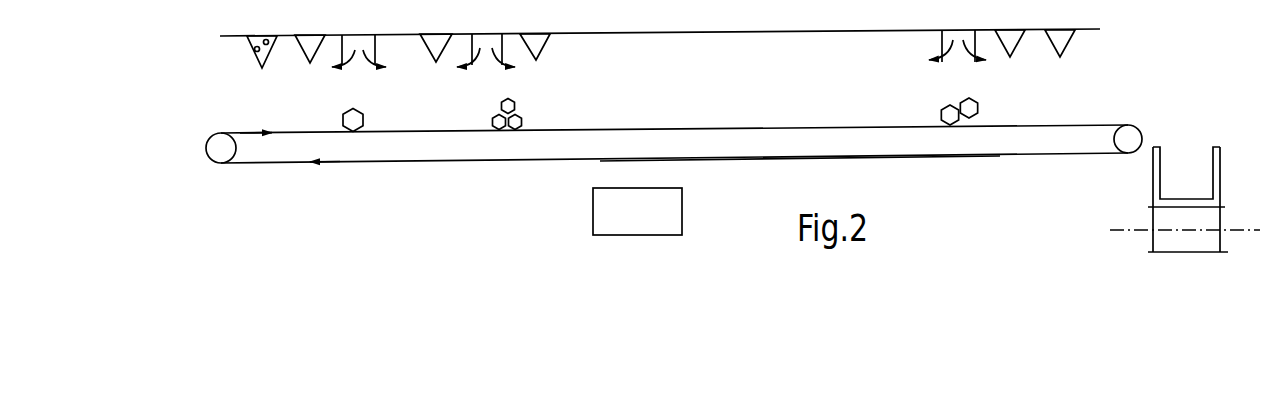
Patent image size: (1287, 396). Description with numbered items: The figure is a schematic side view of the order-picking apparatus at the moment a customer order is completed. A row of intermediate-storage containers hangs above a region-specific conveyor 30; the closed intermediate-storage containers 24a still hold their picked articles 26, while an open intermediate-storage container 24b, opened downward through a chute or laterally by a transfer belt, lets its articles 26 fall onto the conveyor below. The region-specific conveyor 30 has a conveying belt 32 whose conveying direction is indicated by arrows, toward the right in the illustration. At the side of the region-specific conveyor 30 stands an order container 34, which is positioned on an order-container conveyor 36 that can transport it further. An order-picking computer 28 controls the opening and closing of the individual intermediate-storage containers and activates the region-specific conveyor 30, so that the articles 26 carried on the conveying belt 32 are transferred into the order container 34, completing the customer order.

The closed intermediate-storage container 24a is at (255, 36).
The open intermediate-storage container 24b is at (360, 35).
The articles 26 is at (254, 55).
The order-picking computer 28 is at (628, 222).
The region-specific conveyor 30 is at (200, 150).
The conveying belt 32 is at (368, 160).
The order container 34 is at (1217, 148).
The order-container conveyor 36 is at (1183, 237).